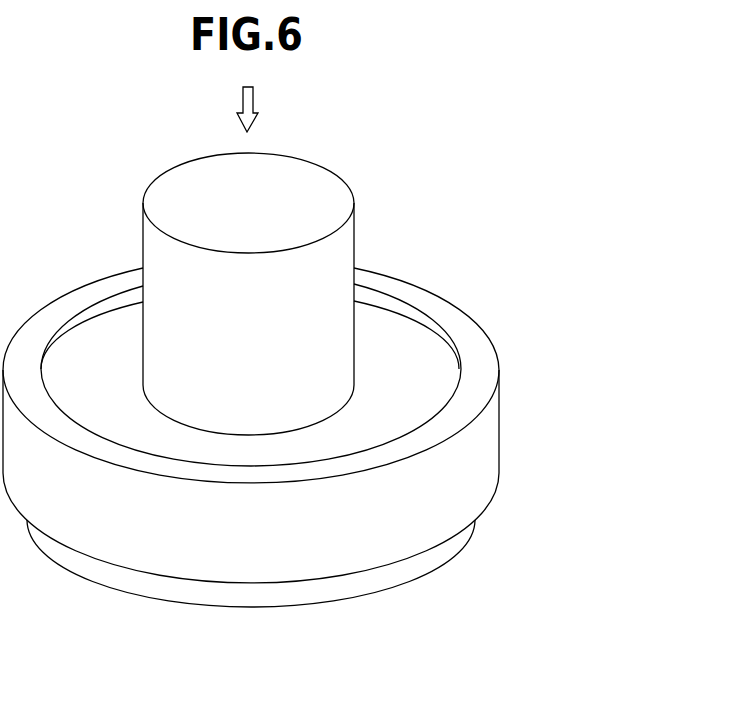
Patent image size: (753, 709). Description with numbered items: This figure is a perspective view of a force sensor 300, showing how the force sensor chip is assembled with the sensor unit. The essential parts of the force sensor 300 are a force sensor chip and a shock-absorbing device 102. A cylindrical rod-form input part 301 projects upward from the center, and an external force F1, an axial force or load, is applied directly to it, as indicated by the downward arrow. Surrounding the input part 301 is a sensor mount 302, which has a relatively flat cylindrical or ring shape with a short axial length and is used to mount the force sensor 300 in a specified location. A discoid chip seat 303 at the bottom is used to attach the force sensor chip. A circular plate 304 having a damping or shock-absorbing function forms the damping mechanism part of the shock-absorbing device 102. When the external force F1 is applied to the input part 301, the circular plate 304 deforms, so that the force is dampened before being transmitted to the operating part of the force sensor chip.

The force sensor 300 is at (450, 258).
The input part 301 is at (300, 178).
The sensor mount 302 is at (488, 436).
The chip seat 303 is at (312, 605).
The circular plate 304 is at (412, 345).
The shock-absorbing device 102 is at (434, 366).
The external force F1 is at (253, 103).